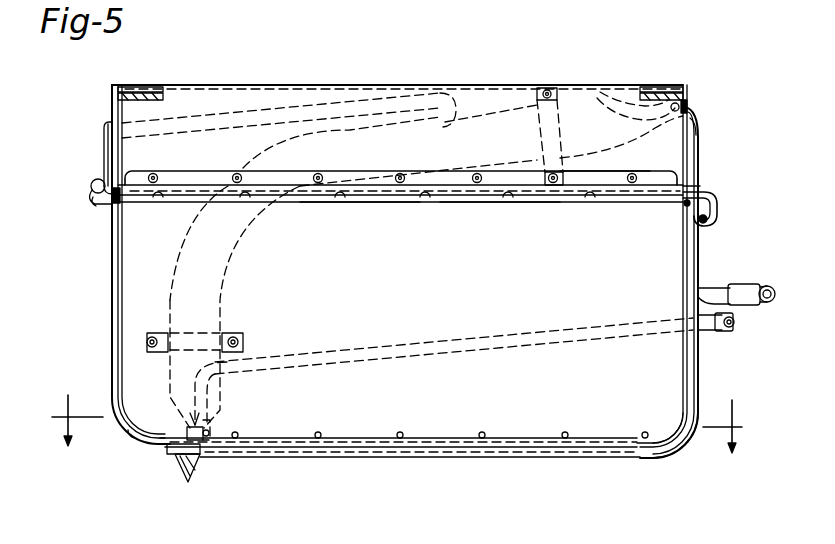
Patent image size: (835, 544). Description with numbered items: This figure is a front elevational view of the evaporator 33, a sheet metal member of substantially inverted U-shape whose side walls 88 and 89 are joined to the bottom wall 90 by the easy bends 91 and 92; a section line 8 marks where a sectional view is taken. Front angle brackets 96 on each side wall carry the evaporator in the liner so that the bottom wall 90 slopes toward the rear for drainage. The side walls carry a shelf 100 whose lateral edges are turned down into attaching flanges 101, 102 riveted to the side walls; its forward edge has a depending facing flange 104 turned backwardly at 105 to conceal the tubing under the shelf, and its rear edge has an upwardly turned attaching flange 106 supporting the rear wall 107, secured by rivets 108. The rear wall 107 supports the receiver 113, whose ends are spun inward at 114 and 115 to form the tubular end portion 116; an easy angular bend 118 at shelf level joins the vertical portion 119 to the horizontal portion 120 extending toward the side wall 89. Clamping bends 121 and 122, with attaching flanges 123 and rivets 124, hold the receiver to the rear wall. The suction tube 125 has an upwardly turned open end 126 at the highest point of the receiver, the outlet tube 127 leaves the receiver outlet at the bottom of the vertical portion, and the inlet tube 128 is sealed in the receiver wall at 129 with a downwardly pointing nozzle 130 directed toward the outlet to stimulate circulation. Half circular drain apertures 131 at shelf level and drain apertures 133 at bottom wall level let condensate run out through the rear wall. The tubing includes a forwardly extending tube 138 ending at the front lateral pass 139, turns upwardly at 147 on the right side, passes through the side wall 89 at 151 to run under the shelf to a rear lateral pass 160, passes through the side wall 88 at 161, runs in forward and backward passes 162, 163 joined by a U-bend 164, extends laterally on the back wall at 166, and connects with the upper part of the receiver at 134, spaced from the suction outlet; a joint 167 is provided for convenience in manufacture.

The section line 8 is at (398, 420).
The evaporator 33 is at (362, 92).
The side wall 88 is at (112, 272).
The side wall 89 is at (697, 262).
The bottom wall 90 is at (436, 440).
The easy bend 91 is at (129, 430).
The easy bend 92 is at (679, 425).
The front angle bracket 96 is at (140, 88).
The shelf 100 is at (450, 204).
The attaching flange 101 is at (116, 205).
The attaching flange 102 is at (683, 201).
The facing flange 104 is at (505, 204).
The backwardly turned portion 105 is at (360, 204).
The attaching flange 106 is at (600, 172).
The rear wall 107 is at (698, 138).
The rivets 108 is at (470, 173).
The receiver 113 is at (263, 210).
The spun-in end 114 is at (210, 422).
The spun-in end 115 is at (636, 132).
The tubular end portion 116 is at (186, 433).
The angular bend 118 is at (245, 169).
The vertical portion 119 is at (169, 313).
The horizontal portion 120 is at (478, 116).
The clamping bend 121 is at (560, 80).
The clamping bend 122 is at (236, 333).
The attaching flanges 123 is at (166, 351).
The rivets 124 is at (153, 337).
The suction tube 125 is at (688, 110).
The open end 126 is at (605, 104).
The outlet tube 127 is at (673, 106).
The inlet tube 128 is at (393, 349).
The seal point 129 is at (222, 370).
The nozzle 130 is at (190, 413).
The drain apertures 131 is at (153, 174).
The drain apertures 133 is at (321, 436).
The receiver connection 134 is at (452, 110).
The forwardly extending tube 138 is at (166, 448).
The front lateral pass 139 is at (390, 458).
The upward turn 147 is at (684, 449).
The side wall pass-through 151 is at (686, 186).
The rear lateral pass 160 is at (700, 196).
The side wall pass-through 161 is at (90, 201).
The forward and backward pass 162 is at (92, 182).
The forward and backward pass 163 is at (104, 130).
The U-bend 164 is at (104, 152).
The lateral tubing on back wall 166 is at (225, 113).
The joint 167 is at (708, 212).